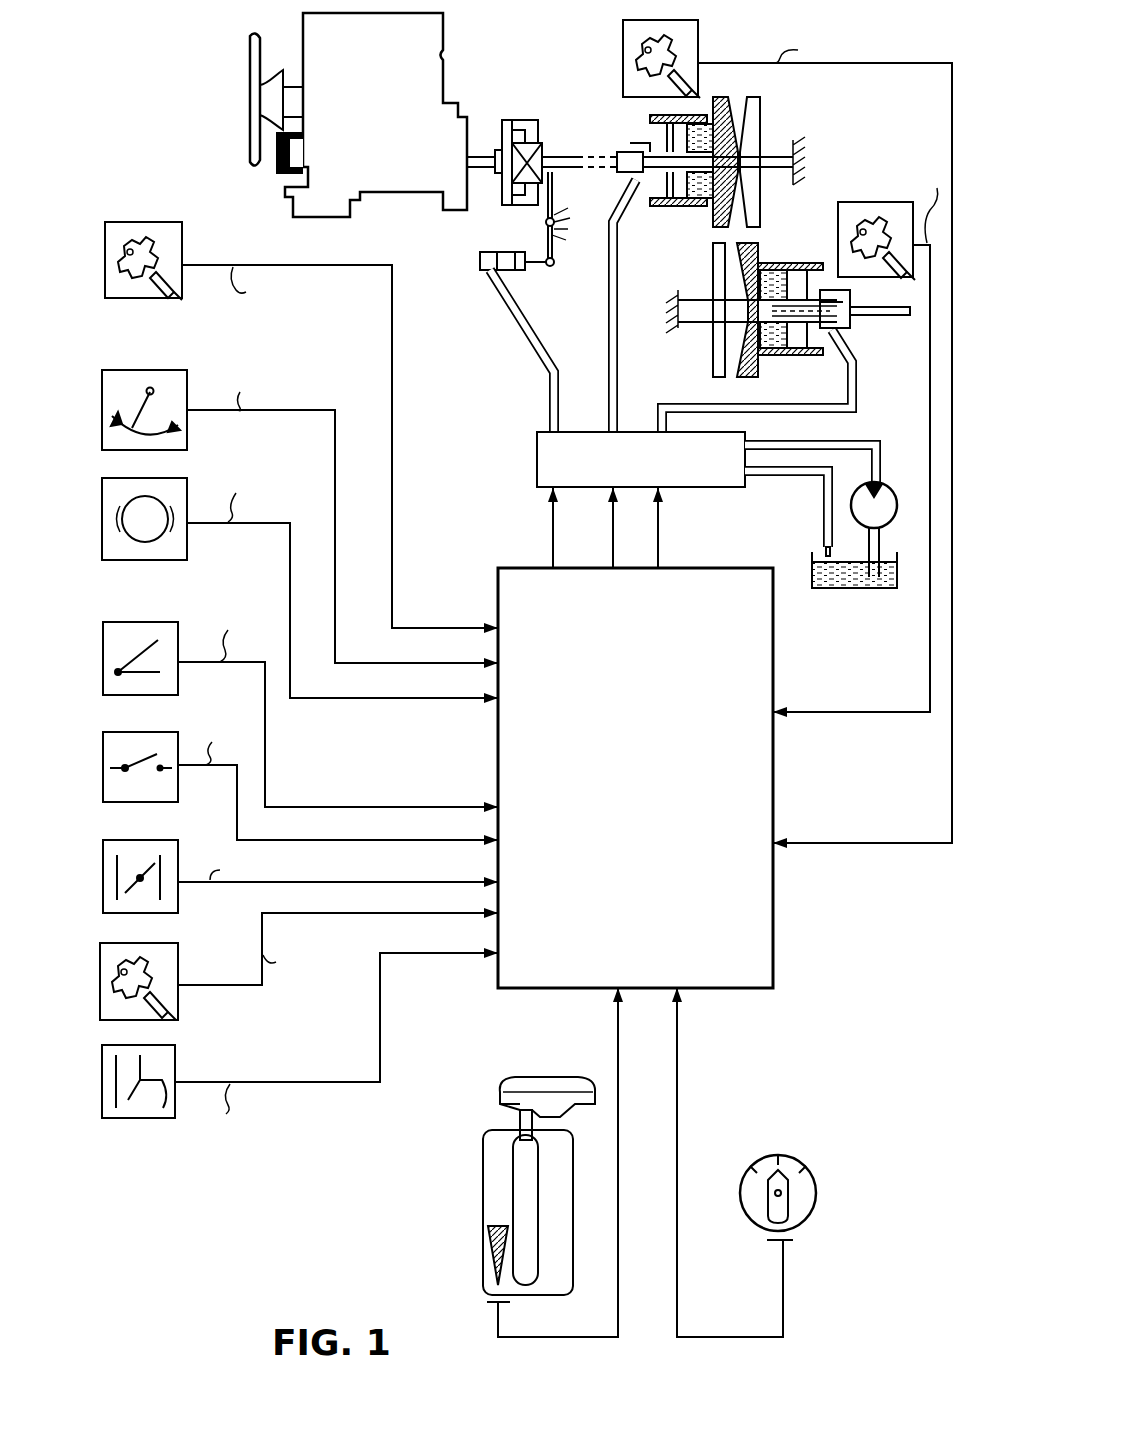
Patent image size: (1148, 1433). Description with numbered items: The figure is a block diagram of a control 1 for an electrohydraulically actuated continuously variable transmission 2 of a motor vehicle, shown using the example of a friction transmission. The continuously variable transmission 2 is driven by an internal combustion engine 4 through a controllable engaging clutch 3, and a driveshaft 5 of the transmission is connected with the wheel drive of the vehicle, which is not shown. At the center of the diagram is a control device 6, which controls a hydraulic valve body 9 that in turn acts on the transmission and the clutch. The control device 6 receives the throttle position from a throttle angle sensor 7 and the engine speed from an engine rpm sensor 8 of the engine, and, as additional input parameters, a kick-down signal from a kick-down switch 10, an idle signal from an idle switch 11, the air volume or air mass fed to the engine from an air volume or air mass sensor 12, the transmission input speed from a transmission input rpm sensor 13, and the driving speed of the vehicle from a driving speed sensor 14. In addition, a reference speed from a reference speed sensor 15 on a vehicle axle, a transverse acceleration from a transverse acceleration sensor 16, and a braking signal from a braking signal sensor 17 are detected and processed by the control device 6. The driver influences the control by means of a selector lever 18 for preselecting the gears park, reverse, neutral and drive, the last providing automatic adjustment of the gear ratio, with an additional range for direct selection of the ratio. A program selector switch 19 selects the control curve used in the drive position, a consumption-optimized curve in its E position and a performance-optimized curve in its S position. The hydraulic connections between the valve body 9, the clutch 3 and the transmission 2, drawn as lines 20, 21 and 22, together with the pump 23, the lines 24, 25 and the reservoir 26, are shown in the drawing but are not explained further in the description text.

The control 1 is at (802, 899).
The continuously variable transmission 2 is at (840, 140).
The engaging clutch 3 is at (545, 105).
The internal combustion engine 4 is at (450, 80).
The driveshaft 5 is at (893, 316).
The control device 6 is at (775, 652).
The throttle angle sensor 7 is at (103, 895).
The engine rpm sensor 8 is at (100, 990).
The hydraulic valve body 9 is at (537, 460).
The kick-down switch 10 is at (103, 685).
The idle switch 11 is at (103, 778).
The air volume or air mass sensor 12 is at (102, 1110).
The transmission input rpm sensor 13 is at (698, 30).
The driving speed sensor 14 is at (866, 203).
The reference speed sensor 15 is at (110, 298).
The transverse acceleration sensor 16 is at (102, 448).
The braking signal sensor 17 is at (102, 552).
The selector lever 18 is at (483, 1200).
The program selector switch 19 is at (745, 1216).
The clutch pressure line (pk) 20 is at (533, 338).
The primary pressure line (pe) 21 is at (620, 282).
The secondary pressure line (pa) 22 is at (669, 403).
The hydraulic pump 23 is at (897, 488).
The pump pressure line 24 is at (880, 444).
The return line 25 is at (823, 505).
The oil reservoir 26 is at (858, 589).